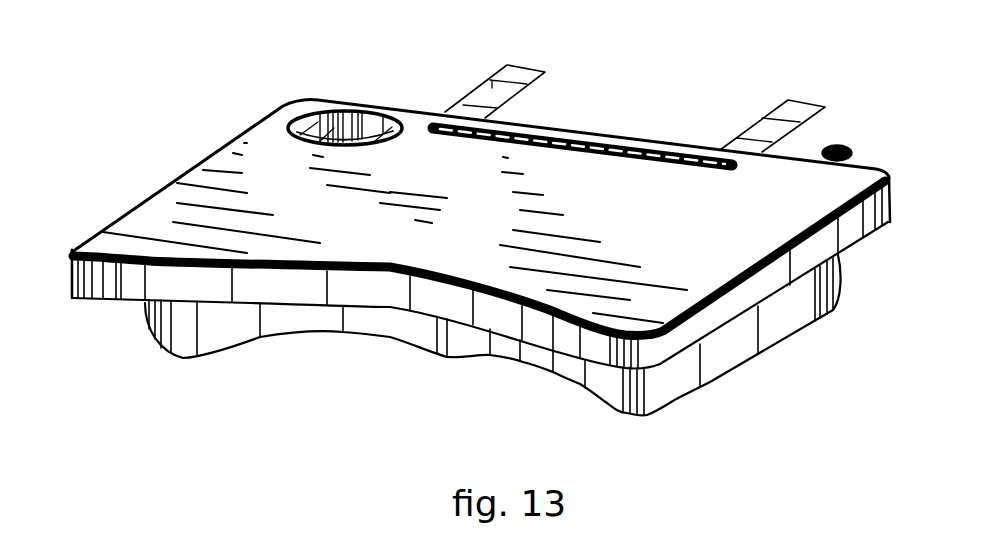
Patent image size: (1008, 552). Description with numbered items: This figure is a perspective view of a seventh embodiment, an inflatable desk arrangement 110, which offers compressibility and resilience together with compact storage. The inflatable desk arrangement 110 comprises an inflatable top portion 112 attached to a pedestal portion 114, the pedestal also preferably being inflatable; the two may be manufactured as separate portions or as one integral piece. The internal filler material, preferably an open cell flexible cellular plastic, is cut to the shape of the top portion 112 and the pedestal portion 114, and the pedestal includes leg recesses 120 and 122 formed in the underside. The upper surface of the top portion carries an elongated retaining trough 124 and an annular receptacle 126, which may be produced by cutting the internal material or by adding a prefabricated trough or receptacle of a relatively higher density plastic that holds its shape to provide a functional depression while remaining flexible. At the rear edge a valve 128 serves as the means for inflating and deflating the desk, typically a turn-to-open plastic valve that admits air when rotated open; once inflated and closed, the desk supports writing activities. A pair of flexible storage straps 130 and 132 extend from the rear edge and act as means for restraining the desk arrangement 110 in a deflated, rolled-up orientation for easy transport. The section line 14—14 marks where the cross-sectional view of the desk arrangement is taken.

The inflatable desk arrangement 110 is at (163, 183).
The inflatable top portion 112 is at (837, 247).
The pedestal portion 114 is at (740, 356).
The leg recess 120 is at (347, 337).
The leg recess 122 is at (497, 355).
The elongated retaining trough 124 is at (538, 140).
The annular receptacle 126 is at (328, 117).
The valve 128 is at (843, 150).
The flexible storage strap 130 is at (530, 67).
The flexible storage strap 132 is at (803, 97).
The section line 14— 14 is at (566, 389).